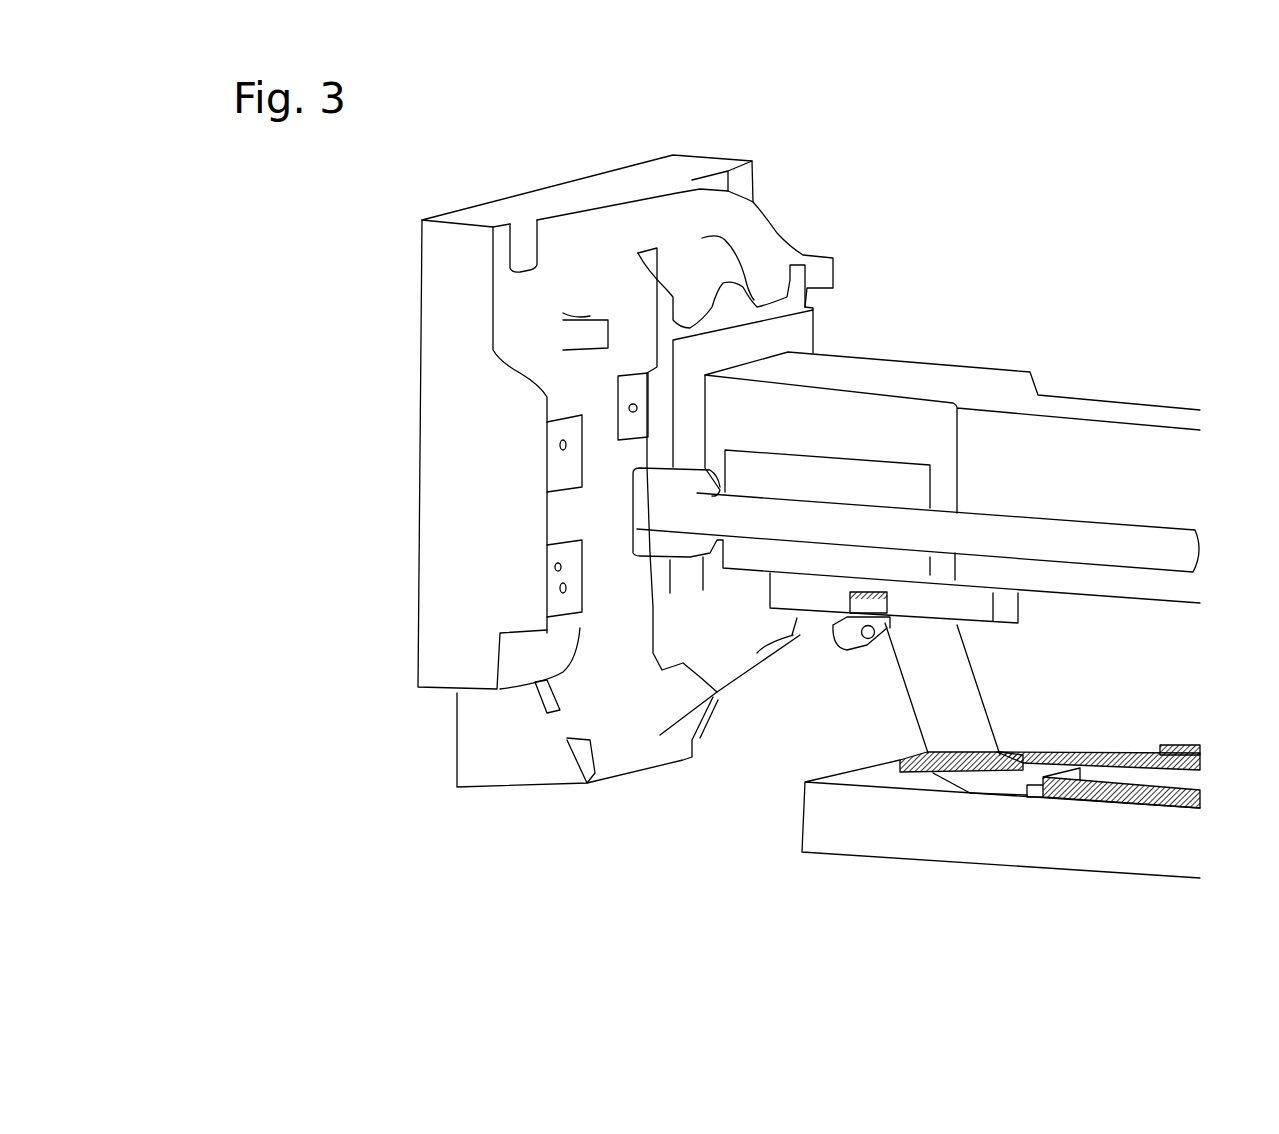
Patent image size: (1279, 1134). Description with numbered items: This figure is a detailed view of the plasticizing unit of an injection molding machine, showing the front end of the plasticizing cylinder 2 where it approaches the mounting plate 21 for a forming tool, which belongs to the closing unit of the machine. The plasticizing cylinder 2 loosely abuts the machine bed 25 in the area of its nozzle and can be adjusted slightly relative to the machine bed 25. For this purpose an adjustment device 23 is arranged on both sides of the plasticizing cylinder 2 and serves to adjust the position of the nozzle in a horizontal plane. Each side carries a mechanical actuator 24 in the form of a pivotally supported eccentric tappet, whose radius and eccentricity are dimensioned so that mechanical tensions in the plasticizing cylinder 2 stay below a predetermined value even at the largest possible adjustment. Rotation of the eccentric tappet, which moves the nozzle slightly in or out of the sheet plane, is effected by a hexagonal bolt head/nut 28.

The plasticizing cylinder 2 is at (1033, 448).
The mounting plate 21 is at (702, 208).
The adjustment device 23 is at (813, 637).
The mechanical actuator 24 is at (873, 603).
The machine bed 25 is at (1057, 828).
The hexagonal bolt head/nut 28 is at (862, 640).